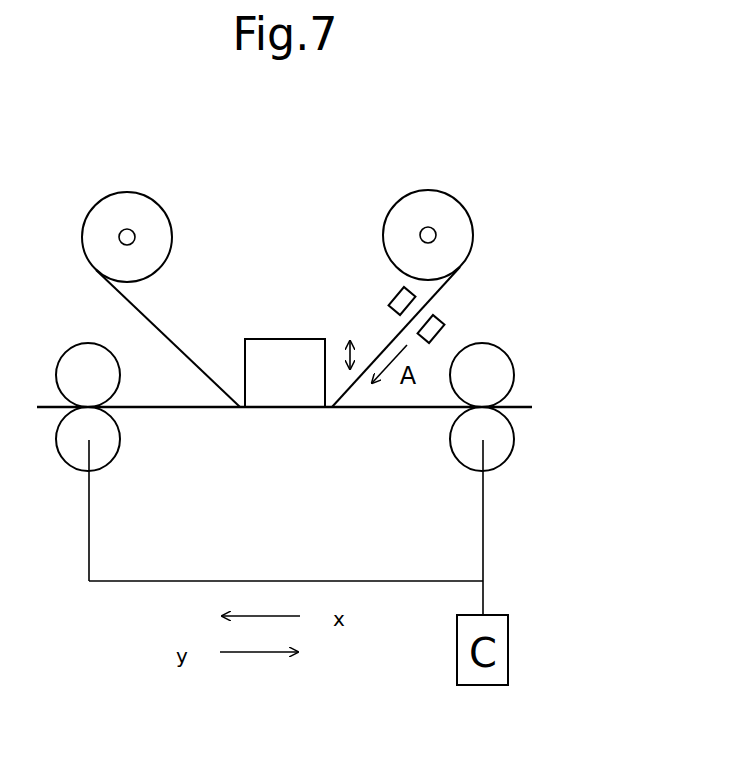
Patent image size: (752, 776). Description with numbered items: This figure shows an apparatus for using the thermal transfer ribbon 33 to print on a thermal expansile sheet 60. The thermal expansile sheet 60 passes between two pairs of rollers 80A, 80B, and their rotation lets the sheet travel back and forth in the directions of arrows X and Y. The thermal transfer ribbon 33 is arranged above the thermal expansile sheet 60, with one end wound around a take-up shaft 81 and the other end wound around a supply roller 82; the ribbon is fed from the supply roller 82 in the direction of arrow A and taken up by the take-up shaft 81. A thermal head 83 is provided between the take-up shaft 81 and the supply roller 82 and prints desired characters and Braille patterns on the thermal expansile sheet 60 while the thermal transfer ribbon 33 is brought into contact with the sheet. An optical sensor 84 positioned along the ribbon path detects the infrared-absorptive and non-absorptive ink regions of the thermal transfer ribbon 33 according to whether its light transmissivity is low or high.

The thermal transfer ribbon 33 is at (148, 317).
The thermal expansile sheet 60 is at (510, 410).
The roller 80A is at (503, 368).
The roller 80B is at (80, 358).
The take-up shaft 81 is at (117, 197).
The supply roller 82 is at (428, 197).
The thermal head 83 is at (281, 353).
The optical sensor 84 is at (408, 294).